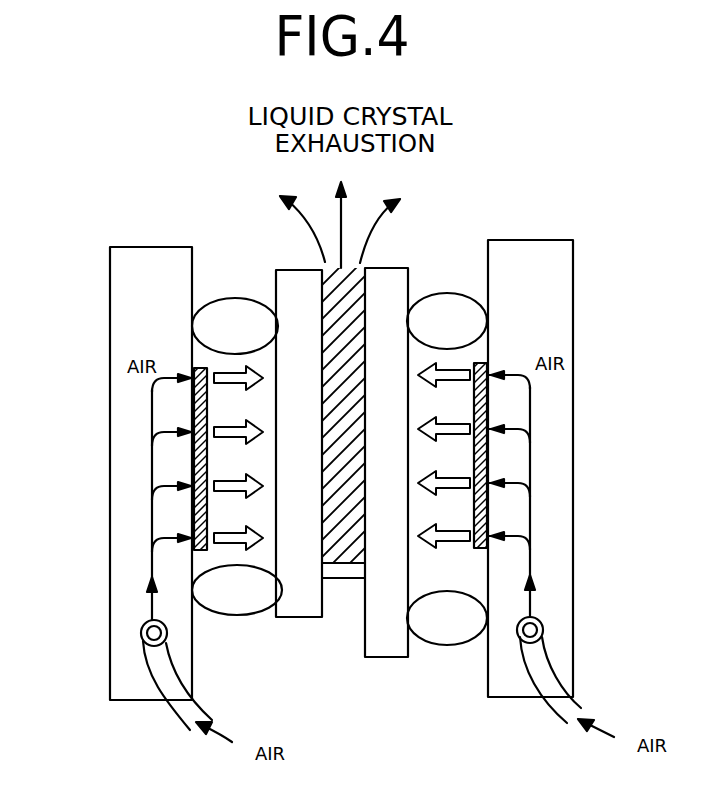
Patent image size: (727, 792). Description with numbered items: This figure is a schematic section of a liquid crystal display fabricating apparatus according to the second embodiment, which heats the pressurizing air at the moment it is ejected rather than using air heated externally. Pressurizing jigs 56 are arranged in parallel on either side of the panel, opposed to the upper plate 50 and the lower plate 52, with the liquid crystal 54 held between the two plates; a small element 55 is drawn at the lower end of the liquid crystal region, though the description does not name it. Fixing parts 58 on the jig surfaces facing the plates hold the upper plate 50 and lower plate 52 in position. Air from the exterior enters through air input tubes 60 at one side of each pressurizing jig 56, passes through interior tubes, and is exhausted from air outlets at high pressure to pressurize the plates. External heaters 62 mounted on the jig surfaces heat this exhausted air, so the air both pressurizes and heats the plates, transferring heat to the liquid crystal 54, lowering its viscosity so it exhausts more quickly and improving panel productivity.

The upper plate 50 is at (293, 277).
The lower plate 52 is at (383, 280).
The liquid crystal 54 is at (328, 345).
The sealant 55 is at (347, 578).
The pressurizing jigs 56 is at (110, 293).
The fixing parts 58 is at (232, 300).
The air input tubes 60 is at (158, 683).
The external heaters 62 is at (200, 438).